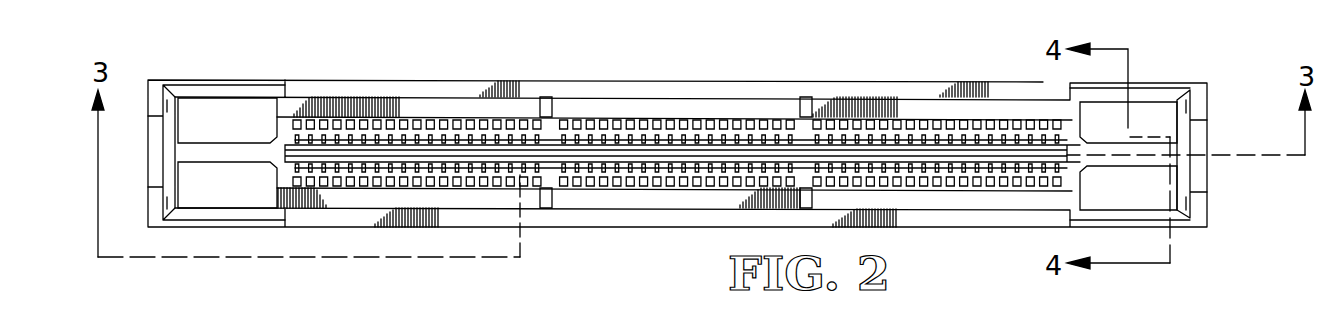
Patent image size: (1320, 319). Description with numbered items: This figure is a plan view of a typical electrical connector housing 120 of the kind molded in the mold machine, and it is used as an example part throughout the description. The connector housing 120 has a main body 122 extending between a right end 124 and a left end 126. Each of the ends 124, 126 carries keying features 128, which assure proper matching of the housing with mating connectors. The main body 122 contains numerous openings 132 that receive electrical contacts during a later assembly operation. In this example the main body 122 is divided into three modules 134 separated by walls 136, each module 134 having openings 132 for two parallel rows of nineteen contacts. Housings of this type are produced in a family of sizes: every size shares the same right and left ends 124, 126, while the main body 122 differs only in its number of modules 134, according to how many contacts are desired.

The connector housing 120 is at (705, 56).
The main body 122 is at (560, 227).
The right end 124 is at (1193, 228).
The left end 126 is at (252, 80).
The keying features 128 is at (186, 105).
The openings 132 is at (898, 140).
The modules 134 is at (352, 218).
The walls 136 is at (543, 117).